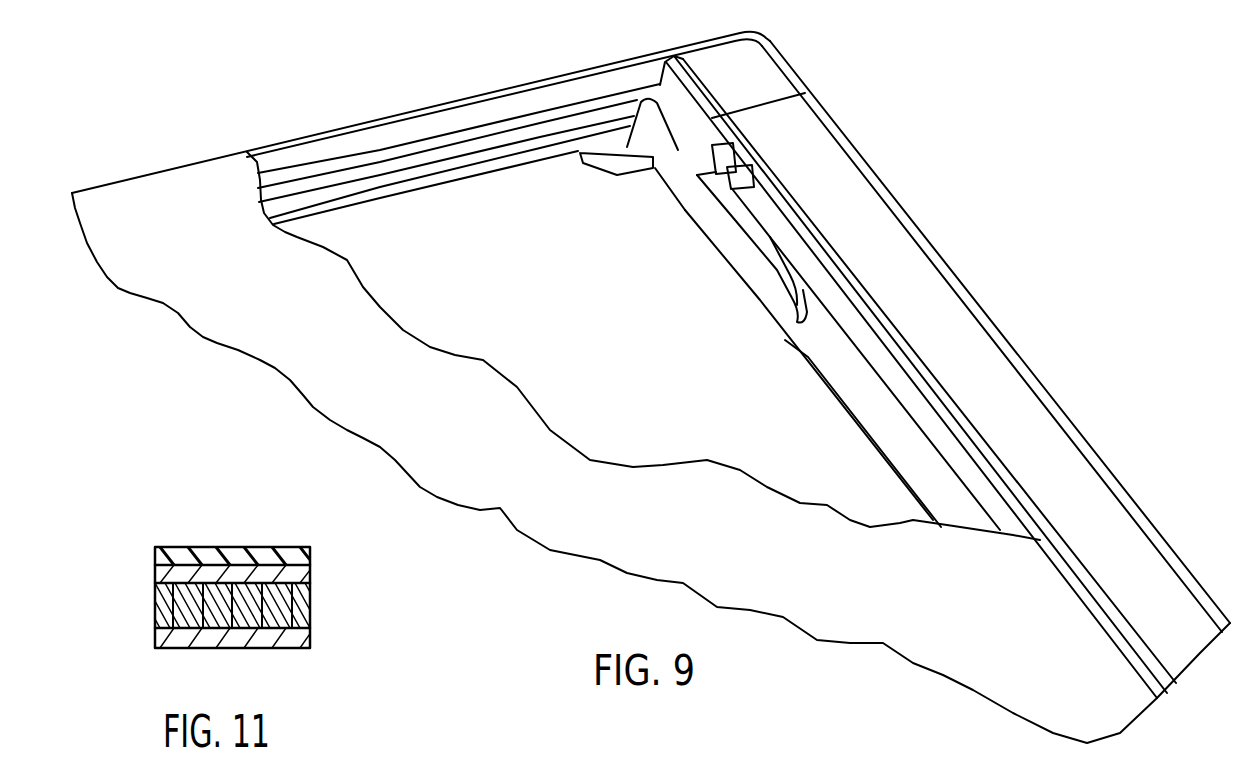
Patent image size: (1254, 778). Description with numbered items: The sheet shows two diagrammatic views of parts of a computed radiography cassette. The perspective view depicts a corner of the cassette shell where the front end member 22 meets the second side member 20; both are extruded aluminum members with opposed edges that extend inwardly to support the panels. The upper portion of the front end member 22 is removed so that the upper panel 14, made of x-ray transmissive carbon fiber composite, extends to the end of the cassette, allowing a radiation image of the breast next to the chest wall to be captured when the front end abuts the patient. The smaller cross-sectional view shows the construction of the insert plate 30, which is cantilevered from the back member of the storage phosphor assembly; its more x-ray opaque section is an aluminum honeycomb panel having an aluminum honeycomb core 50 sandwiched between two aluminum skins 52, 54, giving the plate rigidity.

In FIG. 9, the upper panel 14 is at (190, 177).
In FIG. 9, the second side member 20 is at (895, 230).
In FIG. 9, the front end member 22 is at (485, 108).
In FIG. 11, the insert plate 30 is at (223, 622).
In FIG. 11, the aluminum honeycomb core 50 is at (308, 605).
In FIG. 11, the aluminum skin 52 is at (308, 638).
In FIG. 11, the aluminum skin 54 is at (312, 572).